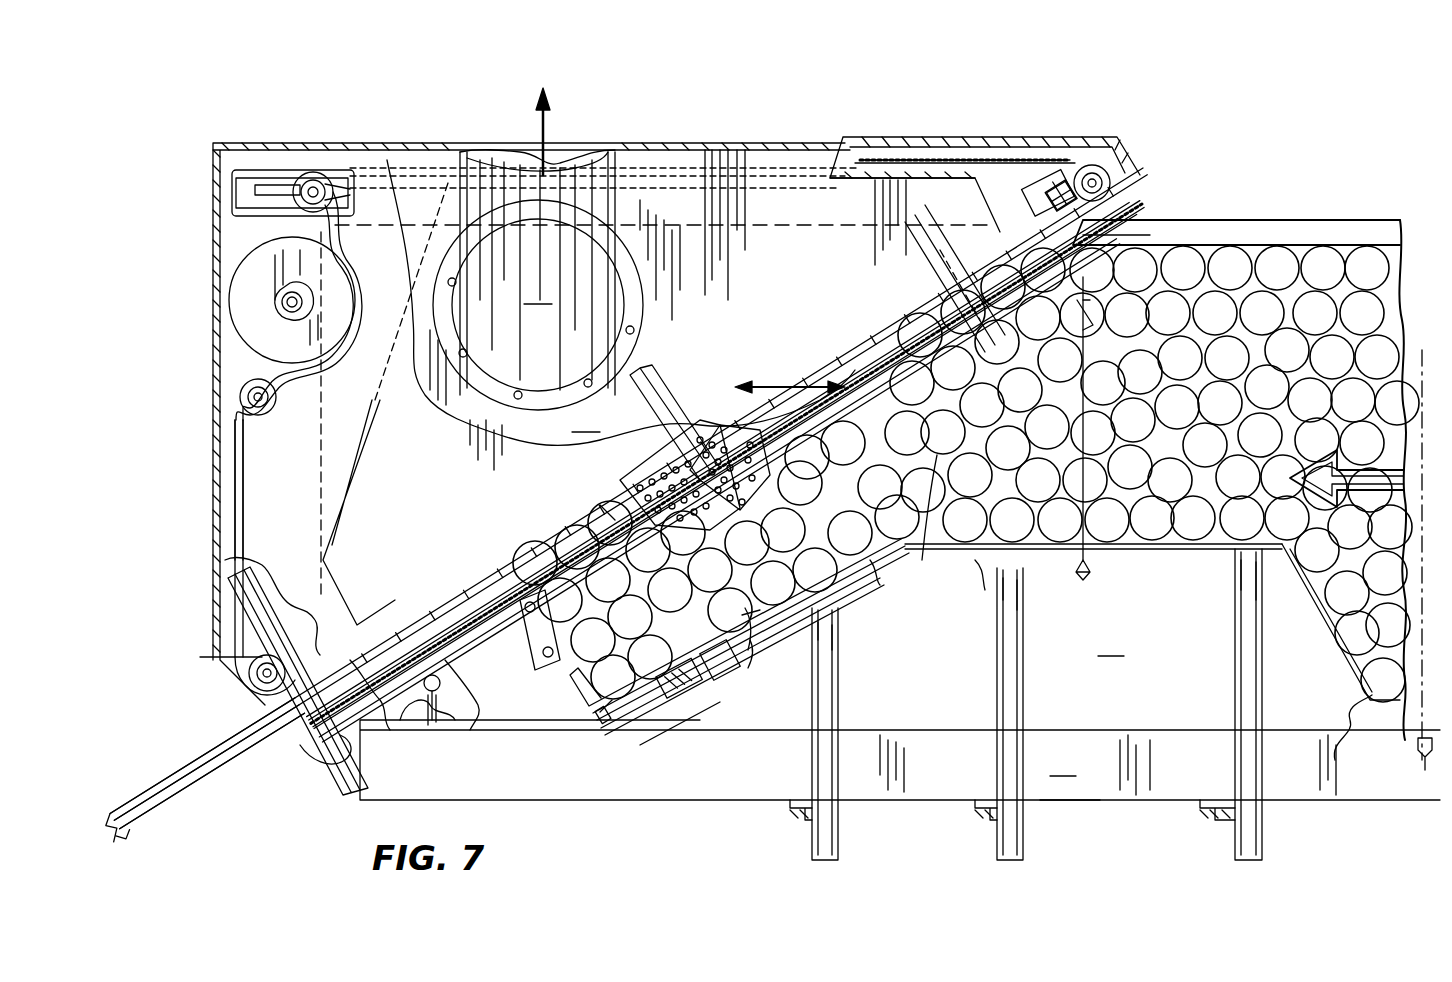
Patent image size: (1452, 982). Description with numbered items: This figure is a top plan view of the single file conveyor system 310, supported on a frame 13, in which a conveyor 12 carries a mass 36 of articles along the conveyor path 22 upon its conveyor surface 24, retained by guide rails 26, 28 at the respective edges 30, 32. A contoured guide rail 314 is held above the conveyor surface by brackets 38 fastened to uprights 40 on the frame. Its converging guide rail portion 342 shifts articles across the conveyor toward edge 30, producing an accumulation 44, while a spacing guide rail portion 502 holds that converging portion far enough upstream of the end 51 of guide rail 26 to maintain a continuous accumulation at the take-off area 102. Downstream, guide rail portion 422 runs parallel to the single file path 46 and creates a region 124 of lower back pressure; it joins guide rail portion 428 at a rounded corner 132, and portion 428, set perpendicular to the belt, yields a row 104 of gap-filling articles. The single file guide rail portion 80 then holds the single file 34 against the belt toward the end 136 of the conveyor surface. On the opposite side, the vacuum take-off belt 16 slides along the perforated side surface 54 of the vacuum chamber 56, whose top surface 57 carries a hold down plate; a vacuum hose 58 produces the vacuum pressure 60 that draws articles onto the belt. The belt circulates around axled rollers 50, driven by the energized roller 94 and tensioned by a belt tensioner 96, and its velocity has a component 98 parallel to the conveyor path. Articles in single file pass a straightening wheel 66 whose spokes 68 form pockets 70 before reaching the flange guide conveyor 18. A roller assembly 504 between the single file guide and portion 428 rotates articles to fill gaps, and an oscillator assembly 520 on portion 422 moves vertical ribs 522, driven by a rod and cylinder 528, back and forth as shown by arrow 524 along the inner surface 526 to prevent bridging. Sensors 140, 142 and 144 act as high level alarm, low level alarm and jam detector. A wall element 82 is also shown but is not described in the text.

The conveyor 12 is at (1352, 665).
The frame 13 is at (1070, 776).
The vacuum take-off belt 16 is at (900, 165).
The flange guide conveyor 18 is at (190, 782).
The conveyor path 22 is at (1346, 478).
The conveyor surface 24 is at (1104, 478).
The guide rail 26 is at (1250, 247).
The guide rail 28 is at (1354, 730).
The edge 30 is at (1345, 222).
The edge 32 is at (896, 732).
The single file 34 is at (598, 508).
The mass 36 is at (1148, 548).
The brackets 38 is at (990, 640).
The uprights 40 is at (795, 818).
The accumulation 44 is at (935, 540).
The single file path 46 is at (745, 418).
The axled rollers 50 is at (262, 408).
The end 51 is at (1143, 230).
The perforated side surface 54 is at (838, 372).
The vacuum chamber 56 is at (850, 178).
The top surface 57 is at (621, 315).
The vacuum hose 58 is at (683, 272).
The vacuum pressure 60 is at (543, 118).
The straightening wheel 66 is at (427, 739).
The spokes 68 is at (462, 690).
The pockets 70 is at (455, 712).
The single file guide rail portion 80 is at (380, 703).
The housing wall 82 is at (272, 568).
The energized roller 94 is at (262, 315).
The belt tensioner 96 is at (313, 180).
The velocity component 98 is at (790, 385).
The take-off area 102 is at (1025, 240).
The row of gap-filling articles 104 is at (568, 660).
The region 124 is at (755, 615).
The rounded corner 132 is at (630, 730).
The end 136 is at (335, 780).
The sensor 140 is at (1425, 772).
The sensor 142 is at (1082, 580).
The sensor 144 is at (308, 758).
The conveyor system 310 is at (1150, 232).
The contoured guide rail 314 is at (1195, 552).
The guide rail portion 342 is at (1310, 608).
The guide rail portion 422 is at (876, 565).
The guide rail portion 428 is at (552, 738).
The guide rail portion 502 is at (973, 565).
The roller assembly 504 is at (520, 690).
The oscillator assembly 520 is at (652, 728).
The vertical ribs 522 is at (722, 660).
The arrow 524 is at (703, 683).
The inner surface 526 is at (758, 630).
The rod and cylinder 528 is at (700, 738).